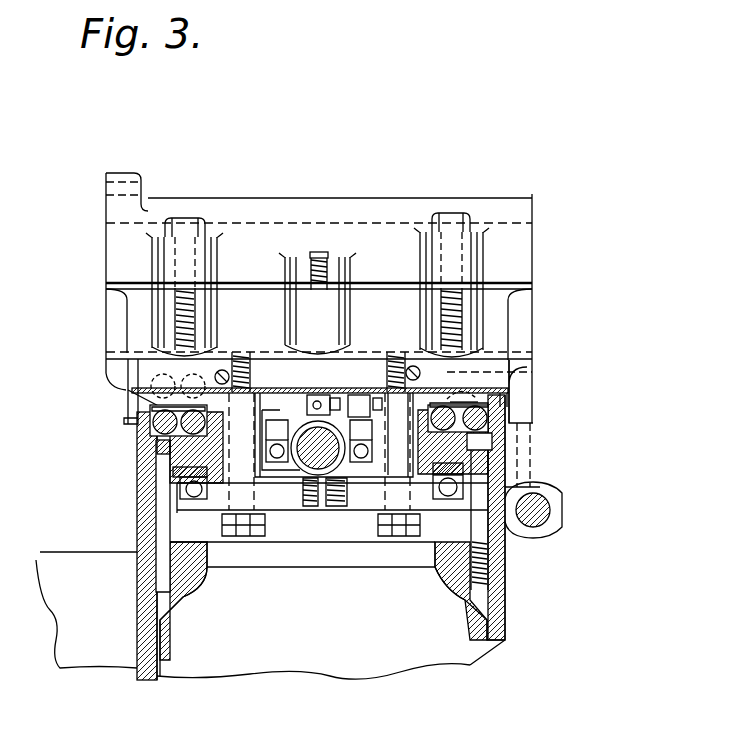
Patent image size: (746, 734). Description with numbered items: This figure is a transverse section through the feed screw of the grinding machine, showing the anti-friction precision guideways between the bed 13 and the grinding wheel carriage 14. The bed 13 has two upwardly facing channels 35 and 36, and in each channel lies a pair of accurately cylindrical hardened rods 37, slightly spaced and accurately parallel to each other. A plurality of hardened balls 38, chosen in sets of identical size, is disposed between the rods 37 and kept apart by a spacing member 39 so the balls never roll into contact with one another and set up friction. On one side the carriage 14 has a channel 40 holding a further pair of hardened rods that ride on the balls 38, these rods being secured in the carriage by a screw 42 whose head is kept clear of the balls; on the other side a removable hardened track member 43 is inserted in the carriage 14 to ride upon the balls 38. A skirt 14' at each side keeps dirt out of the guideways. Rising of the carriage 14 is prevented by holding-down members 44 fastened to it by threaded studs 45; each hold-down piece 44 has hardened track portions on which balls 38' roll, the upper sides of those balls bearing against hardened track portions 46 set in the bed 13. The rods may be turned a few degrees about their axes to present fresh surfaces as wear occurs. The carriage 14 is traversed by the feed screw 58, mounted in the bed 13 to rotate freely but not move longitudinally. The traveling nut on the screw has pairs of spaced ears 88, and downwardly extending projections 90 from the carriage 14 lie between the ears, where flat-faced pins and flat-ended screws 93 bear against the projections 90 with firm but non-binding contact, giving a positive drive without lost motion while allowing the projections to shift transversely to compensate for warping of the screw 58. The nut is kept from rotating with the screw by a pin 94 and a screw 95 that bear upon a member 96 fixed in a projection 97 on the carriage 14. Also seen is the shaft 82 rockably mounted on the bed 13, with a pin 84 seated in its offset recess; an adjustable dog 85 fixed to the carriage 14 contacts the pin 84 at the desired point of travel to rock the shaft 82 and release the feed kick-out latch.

The bed 13 is at (136, 472).
The grinding wheel carriage 14 is at (300, 298).
The skirt 14' is at (326, 391).
The channel 35 is at (186, 444).
The channel 36 is at (455, 439).
The hardened rods 37 is at (153, 377).
The hardened balls 38 is at (288, 383).
The balls 38' is at (318, 497).
The spacing member 39 is at (447, 376).
The channel 40 is at (197, 380).
The screw 42 is at (193, 378).
The removable hardened track member 43 is at (480, 372).
The holding-down member 44 is at (300, 508).
The threaded studs 45 is at (243, 393).
The hardened track portions 46 is at (498, 470).
The feed screw 58 is at (305, 462).
The shaft 82 is at (551, 521).
The pin 84 is at (520, 447).
The adjustable dog 85 is at (524, 402).
The ears 88 is at (548, 493).
The projections 90 is at (266, 437).
The screw 93 is at (276, 443).
The pin 94 is at (316, 400).
The screw 95 is at (388, 395).
The member 96 is at (320, 401).
The projection 97 is at (340, 420).